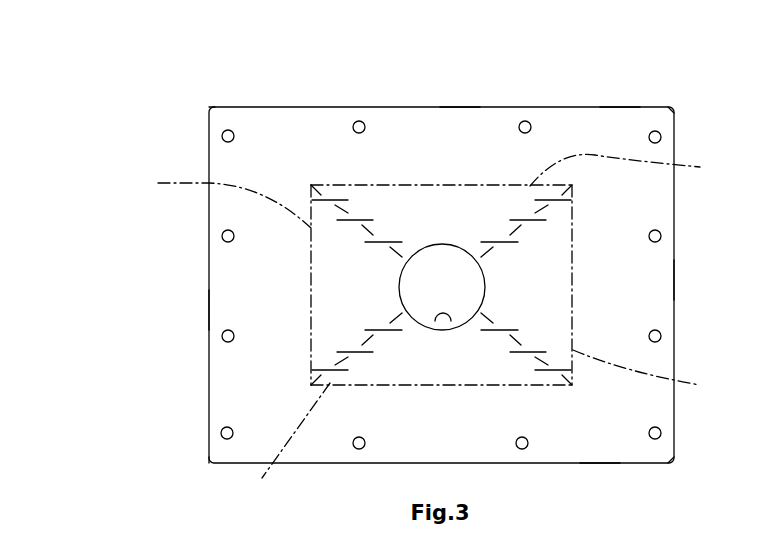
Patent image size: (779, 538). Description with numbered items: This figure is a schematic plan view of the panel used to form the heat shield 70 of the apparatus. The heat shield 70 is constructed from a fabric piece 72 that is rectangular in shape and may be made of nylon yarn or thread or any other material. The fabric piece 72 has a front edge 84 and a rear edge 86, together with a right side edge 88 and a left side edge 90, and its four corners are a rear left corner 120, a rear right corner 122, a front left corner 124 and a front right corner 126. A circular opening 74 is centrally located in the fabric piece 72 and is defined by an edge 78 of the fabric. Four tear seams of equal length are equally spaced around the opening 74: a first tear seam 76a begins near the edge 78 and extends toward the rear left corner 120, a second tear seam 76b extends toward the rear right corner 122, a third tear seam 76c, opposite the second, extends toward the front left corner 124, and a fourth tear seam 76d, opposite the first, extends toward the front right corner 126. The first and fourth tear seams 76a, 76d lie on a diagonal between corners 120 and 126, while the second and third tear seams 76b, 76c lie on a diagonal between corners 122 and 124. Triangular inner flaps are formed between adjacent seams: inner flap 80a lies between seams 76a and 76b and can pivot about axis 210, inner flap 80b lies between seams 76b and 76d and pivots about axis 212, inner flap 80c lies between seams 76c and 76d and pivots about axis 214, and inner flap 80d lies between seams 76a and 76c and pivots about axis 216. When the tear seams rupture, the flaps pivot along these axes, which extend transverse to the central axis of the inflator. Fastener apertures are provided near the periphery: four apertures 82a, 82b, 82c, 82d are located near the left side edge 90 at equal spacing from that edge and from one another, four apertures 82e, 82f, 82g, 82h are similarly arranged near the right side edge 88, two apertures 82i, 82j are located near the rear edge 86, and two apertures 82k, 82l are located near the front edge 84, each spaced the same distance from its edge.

The heat shield 70 is at (261, 100).
The fabric piece 72 is at (607, 128).
The circular opening 74 is at (447, 268).
The first tear seam 76a is at (338, 200).
The second tear seam 76b is at (556, 205).
The third tear seam 76c is at (360, 348).
The fourth tear seam 76d is at (537, 352).
The edge 78 is at (437, 329).
The inner flap 80a is at (466, 218).
The inner flap 80b is at (517, 278).
The inner flap 80c is at (472, 345).
The inner flap 80d is at (387, 282).
The fastener aperture 82a is at (222, 136).
The fastener aperture 82b is at (222, 238).
The fastener aperture 82c is at (222, 338).
The fastener aperture 82d is at (222, 430).
The fastener aperture 82e is at (661, 137).
The fastener aperture 82f is at (660, 233).
The fastener aperture 82g is at (661, 336).
The fastener aperture 82h is at (660, 430).
The fastener aperture 82i is at (364, 123).
The fastener aperture 82j is at (529, 123).
The fastener aperture 82k is at (526, 448).
The fastener aperture 82l is at (354, 447).
The front edge 84 is at (605, 463).
The rear edge 86 is at (463, 105).
The right side edge 88 is at (674, 277).
The left side edge 90 is at (209, 305).
The rear left corner 120 is at (210, 107).
The rear right corner 122 is at (674, 113).
The front left corner 124 is at (205, 463).
The front right corner 126 is at (674, 463).
The axis 210 is at (640, 170).
The axis 212 is at (664, 371).
The axis 214 is at (281, 446).
The axis 216 is at (208, 199).